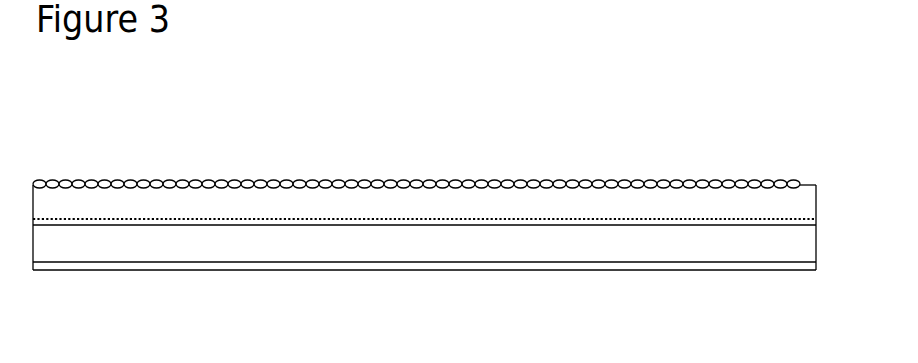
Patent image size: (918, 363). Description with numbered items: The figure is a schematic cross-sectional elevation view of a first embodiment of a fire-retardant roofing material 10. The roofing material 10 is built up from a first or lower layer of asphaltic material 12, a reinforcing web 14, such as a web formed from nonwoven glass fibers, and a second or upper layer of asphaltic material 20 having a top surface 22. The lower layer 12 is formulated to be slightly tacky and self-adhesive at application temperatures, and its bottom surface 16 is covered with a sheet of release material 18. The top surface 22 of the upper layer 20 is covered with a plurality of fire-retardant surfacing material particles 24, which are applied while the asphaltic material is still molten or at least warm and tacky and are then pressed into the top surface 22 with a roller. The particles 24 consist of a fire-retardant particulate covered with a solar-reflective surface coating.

The fire-retardant roofing material 10 is at (637, 99).
The lower layer of asphaltic material 12 is at (338, 242).
The reinforcing web 14 is at (467, 225).
The bottom surface 16 is at (567, 262).
The sheet of release material 18 is at (732, 266).
The upper layer of asphaltic material 20 is at (138, 203).
The top surface 22 is at (370, 183).
The fire-retardant surfacing material particles 24 is at (185, 183).